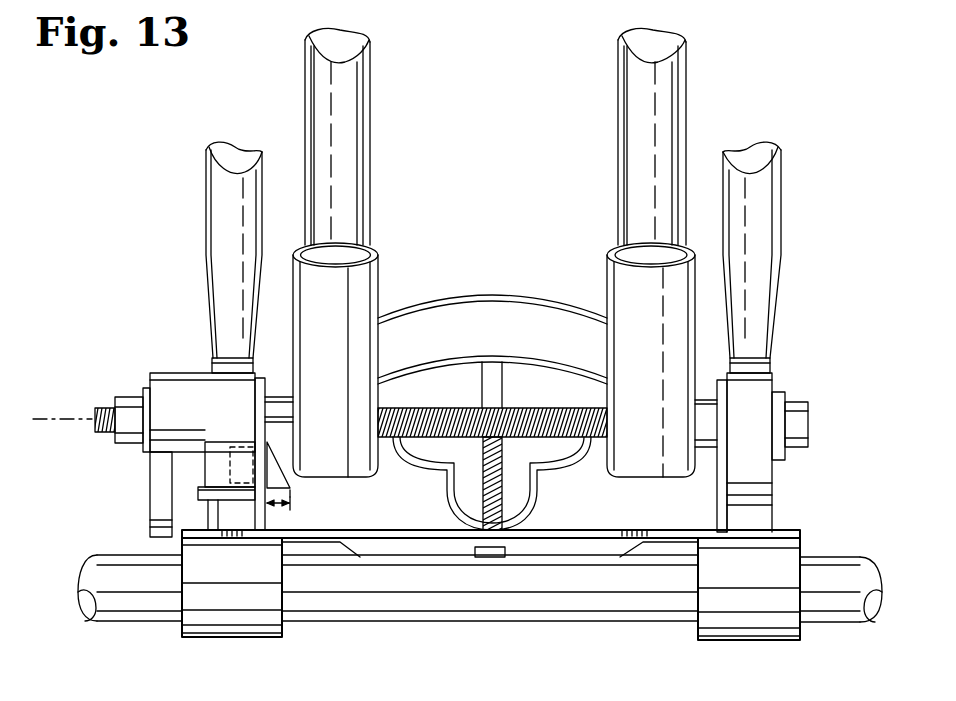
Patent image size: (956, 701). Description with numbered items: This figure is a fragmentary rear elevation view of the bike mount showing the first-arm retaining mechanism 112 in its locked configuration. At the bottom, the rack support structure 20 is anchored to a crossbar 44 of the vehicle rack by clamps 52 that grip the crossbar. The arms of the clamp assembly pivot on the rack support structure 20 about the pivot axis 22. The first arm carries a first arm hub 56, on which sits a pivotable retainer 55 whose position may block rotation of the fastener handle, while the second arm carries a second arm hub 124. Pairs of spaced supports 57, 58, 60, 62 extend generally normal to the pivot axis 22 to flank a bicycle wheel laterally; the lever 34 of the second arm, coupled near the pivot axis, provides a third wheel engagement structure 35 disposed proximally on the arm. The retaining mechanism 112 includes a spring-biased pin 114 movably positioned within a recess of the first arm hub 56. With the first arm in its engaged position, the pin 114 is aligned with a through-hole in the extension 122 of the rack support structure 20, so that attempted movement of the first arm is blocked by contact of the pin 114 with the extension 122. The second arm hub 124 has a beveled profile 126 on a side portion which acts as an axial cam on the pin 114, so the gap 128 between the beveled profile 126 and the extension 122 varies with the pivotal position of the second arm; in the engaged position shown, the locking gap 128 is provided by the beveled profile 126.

The rack support structure 20 is at (580, 530).
The pivot axis 22 is at (62, 418).
The lever 34 is at (492, 326).
The third wheel engagement structure 35 is at (438, 312).
The crossbar 44 is at (147, 598).
The clamp 52 is at (240, 618).
The pivotable retainer 55 is at (163, 498).
The first arm hub 56 is at (170, 377).
The support 57 is at (768, 223).
The support 58 is at (213, 230).
The support 60 is at (633, 152).
The support 62 is at (318, 113).
The first-arm retaining mechanism 112 is at (297, 495).
The pin 114 is at (245, 453).
The extension 122 is at (262, 377).
The second arm hub 124 is at (287, 447).
The beveled profile 126 is at (295, 478).
The gap 128 is at (280, 508).